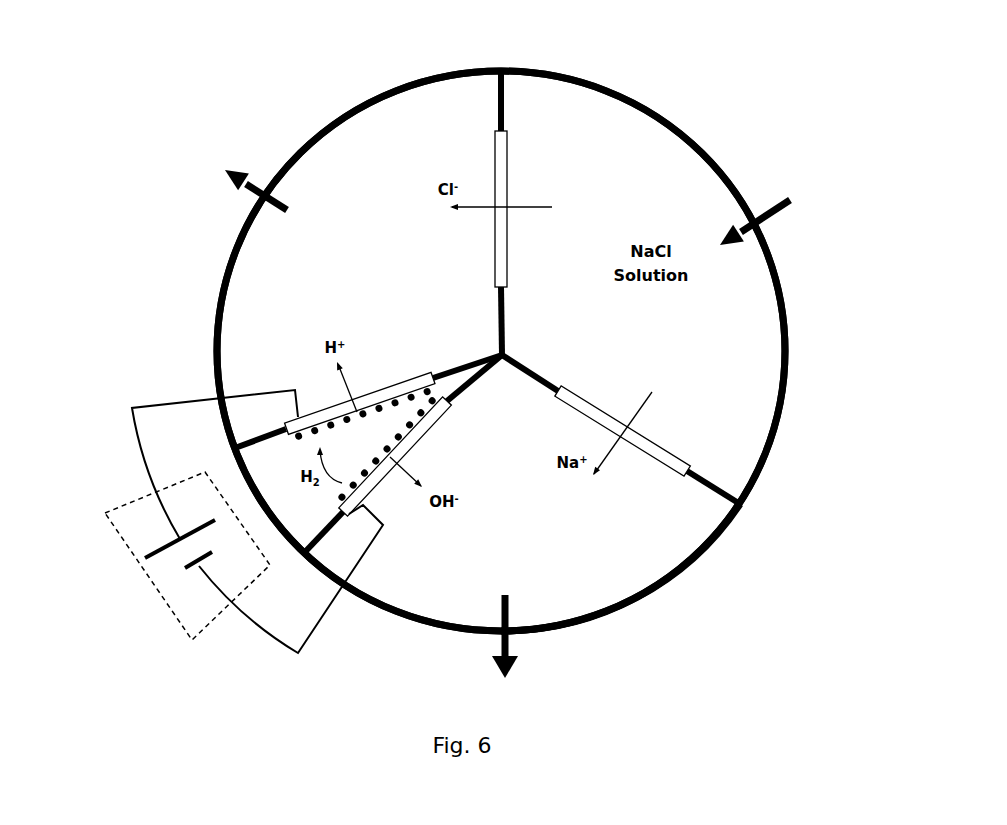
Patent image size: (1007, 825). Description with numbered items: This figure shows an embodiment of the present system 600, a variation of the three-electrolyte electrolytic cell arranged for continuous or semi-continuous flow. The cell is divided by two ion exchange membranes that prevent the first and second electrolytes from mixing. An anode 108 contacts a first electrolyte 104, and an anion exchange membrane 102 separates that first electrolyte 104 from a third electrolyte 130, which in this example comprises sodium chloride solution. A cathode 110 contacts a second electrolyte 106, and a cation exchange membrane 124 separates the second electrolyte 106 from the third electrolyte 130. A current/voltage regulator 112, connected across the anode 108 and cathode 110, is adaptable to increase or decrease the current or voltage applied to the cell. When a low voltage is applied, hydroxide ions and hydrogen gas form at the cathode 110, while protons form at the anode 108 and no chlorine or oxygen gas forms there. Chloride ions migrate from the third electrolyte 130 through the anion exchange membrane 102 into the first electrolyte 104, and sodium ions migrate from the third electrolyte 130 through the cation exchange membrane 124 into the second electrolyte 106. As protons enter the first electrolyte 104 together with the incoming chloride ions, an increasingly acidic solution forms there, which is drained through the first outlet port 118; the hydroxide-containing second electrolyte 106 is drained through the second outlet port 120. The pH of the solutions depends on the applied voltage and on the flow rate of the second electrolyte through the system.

The system 600 is at (820, 120).
The anion exchange membrane 102 is at (504, 130).
The first electrolyte 104 is at (383, 140).
The second electrolyte 106 is at (650, 560).
The anode 108 is at (285, 427).
The cathode 110 is at (347, 515).
The current/voltage regulator 112 is at (127, 552).
The first outlet port 118 is at (236, 185).
The second outlet port 120 is at (515, 665).
The cation exchange membrane 124 is at (690, 470).
The third electrolyte 130 is at (738, 322).